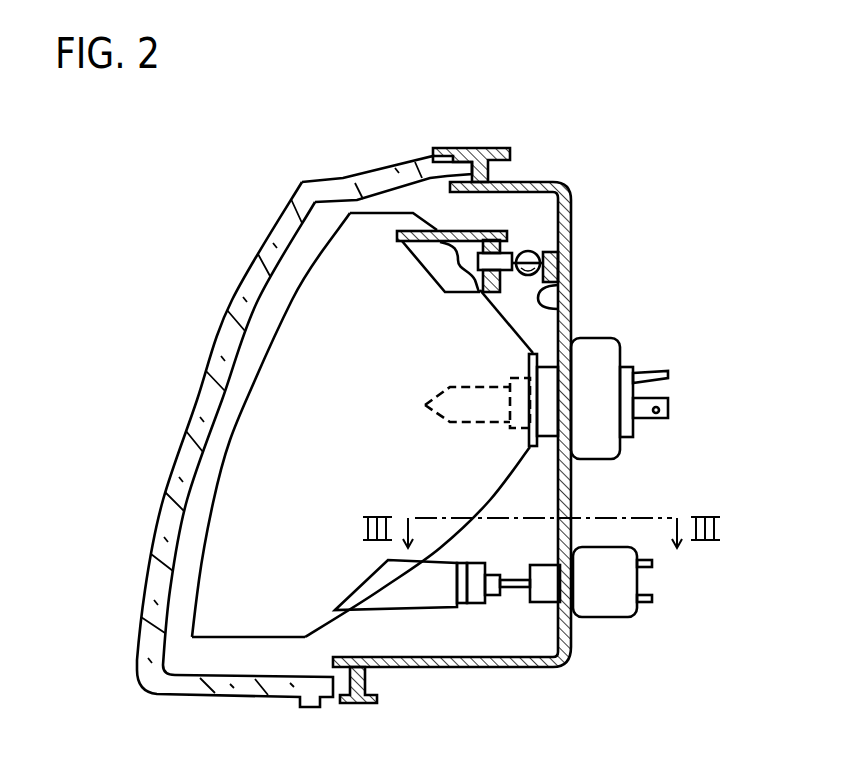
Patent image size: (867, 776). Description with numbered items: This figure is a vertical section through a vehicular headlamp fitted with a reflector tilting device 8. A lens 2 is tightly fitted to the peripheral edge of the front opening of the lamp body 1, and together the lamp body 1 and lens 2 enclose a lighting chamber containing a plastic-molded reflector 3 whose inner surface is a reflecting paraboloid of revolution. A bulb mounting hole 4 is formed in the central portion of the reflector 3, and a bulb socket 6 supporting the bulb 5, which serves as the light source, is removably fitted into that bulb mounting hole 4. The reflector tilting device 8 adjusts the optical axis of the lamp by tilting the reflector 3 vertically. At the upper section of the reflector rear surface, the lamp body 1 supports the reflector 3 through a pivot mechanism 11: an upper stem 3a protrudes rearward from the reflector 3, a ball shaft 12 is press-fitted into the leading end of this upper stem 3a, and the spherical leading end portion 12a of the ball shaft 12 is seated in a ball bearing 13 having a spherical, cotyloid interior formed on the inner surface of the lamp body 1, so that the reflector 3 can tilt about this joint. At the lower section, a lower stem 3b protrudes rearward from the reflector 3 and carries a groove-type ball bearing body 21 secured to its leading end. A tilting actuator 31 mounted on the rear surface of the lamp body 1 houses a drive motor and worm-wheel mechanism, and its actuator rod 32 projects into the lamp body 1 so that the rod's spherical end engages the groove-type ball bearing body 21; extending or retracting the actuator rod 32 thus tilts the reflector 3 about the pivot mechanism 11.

The lamp body 1 is at (562, 184).
The lens 2 is at (280, 218).
The reflector 3 is at (237, 497).
The upper stem 3a is at (453, 230).
The lower stem 3b is at (427, 595).
The bulb mounting hole 4 is at (530, 447).
The bulb 5 is at (457, 397).
The bulb socket 6 is at (545, 392).
The reflector tilting device 8 is at (713, 610).
The pivot mechanism 11 is at (609, 244).
The ball shaft 12 is at (508, 250).
The spherical leading end portion 12a is at (534, 246).
The ball bearing 13 is at (560, 303).
The groove-type ball bearing body 21 is at (482, 593).
The tilting actuator 31 is at (620, 608).
The actuator rod 32 is at (513, 588).